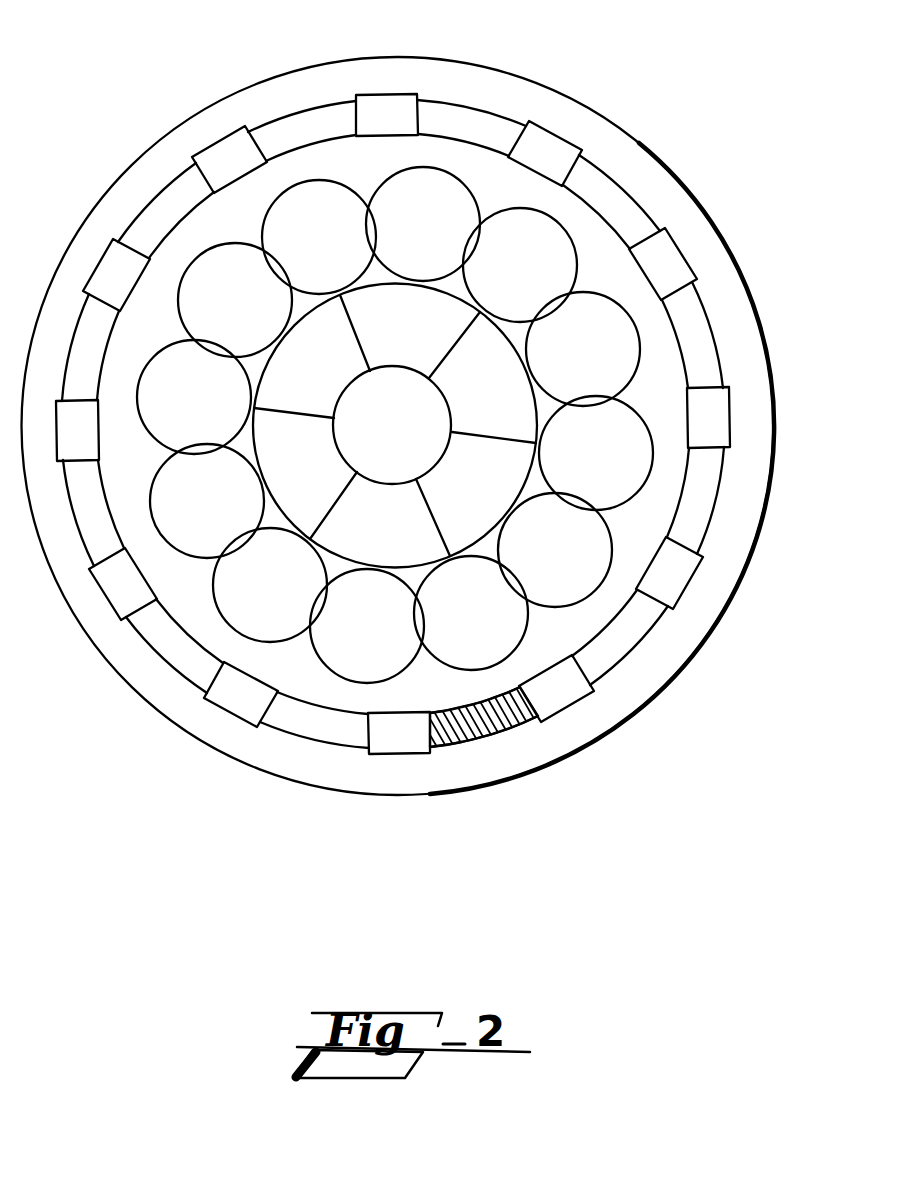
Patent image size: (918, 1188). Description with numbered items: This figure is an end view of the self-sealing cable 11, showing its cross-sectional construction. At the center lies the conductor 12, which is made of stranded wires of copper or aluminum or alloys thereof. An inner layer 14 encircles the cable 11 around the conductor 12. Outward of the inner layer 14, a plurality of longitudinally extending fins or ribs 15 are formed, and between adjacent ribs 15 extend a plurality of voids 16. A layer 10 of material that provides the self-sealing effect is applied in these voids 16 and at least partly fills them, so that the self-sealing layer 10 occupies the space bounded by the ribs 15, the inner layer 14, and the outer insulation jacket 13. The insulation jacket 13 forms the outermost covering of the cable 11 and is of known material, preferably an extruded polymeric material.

The layer of self-sealing material 10 is at (483, 718).
The cable 11 is at (685, 663).
The conductor 12 is at (472, 610).
The outer insulation jacket 13 is at (197, 115).
The inner layer 14 is at (177, 230).
The longitudinally extending fins or ribs 15 is at (140, 613).
The voids 16 is at (310, 725).